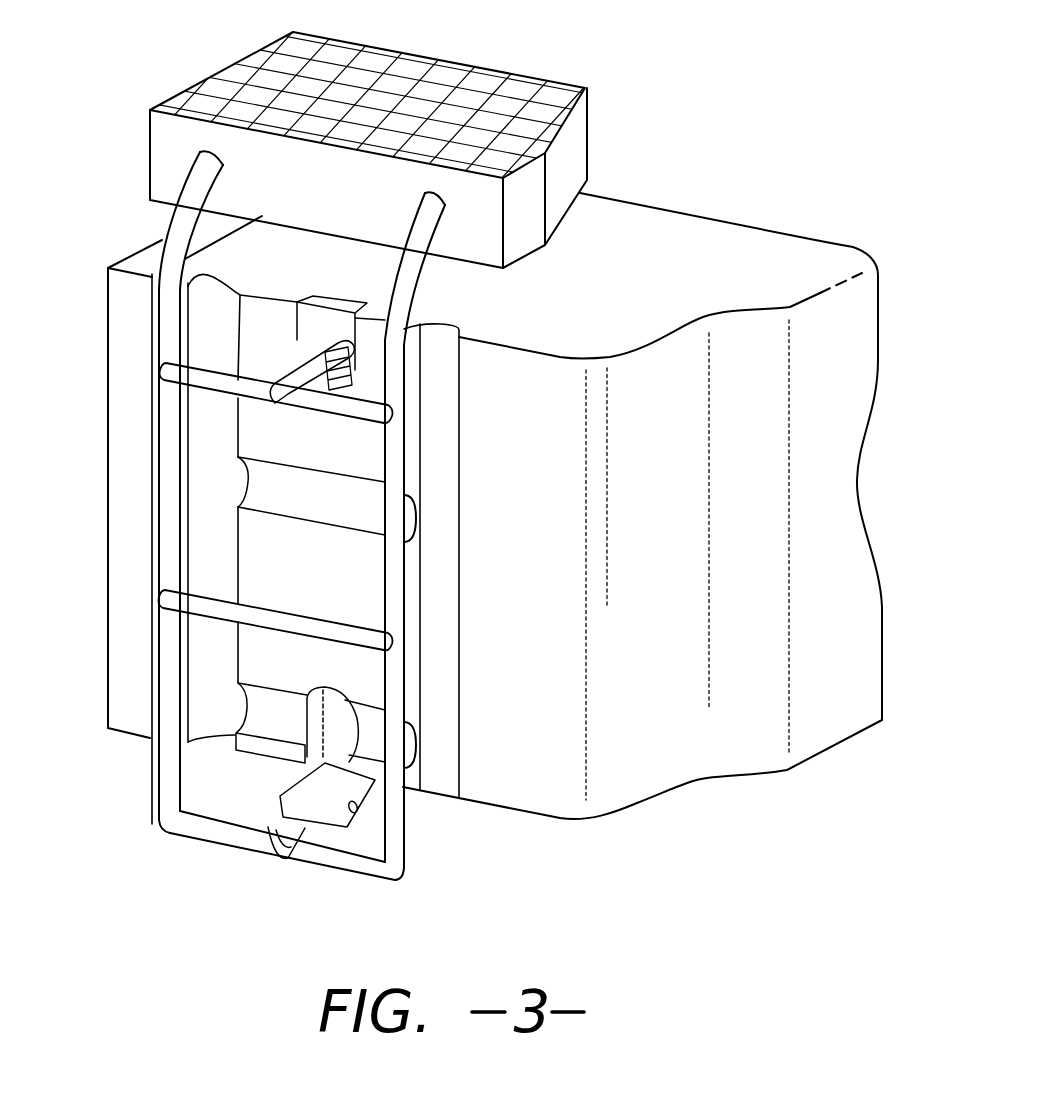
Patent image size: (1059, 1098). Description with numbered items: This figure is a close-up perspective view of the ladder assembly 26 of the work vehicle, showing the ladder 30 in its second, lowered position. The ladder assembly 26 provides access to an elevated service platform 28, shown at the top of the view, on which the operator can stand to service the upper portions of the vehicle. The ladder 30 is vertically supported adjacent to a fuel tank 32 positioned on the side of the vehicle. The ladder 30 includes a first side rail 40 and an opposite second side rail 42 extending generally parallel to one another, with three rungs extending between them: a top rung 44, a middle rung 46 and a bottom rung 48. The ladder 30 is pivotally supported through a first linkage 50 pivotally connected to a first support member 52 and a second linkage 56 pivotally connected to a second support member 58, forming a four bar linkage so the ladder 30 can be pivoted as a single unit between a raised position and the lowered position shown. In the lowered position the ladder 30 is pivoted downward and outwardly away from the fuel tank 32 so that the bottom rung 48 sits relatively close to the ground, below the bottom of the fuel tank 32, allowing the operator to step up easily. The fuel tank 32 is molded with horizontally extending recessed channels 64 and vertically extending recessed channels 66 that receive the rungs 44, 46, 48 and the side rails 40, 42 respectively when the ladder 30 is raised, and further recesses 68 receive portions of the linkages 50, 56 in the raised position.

The ladder assembly 26 is at (652, 74).
The service platform 28 is at (290, 70).
The ladder 30 is at (163, 482).
The fuel tank 32 is at (667, 235).
The first side rail 40 is at (172, 538).
The second side rail 42 is at (392, 588).
The top rung 44 is at (210, 373).
The middle rung 46 is at (210, 603).
The bottom rung 48 is at (222, 832).
The first linkage 50 is at (292, 355).
The first support member 52 is at (370, 377).
The second linkage 56 is at (303, 825).
The second support member 58 is at (367, 800).
The horizontally extending recessed channels 64 is at (247, 485).
The vertically extending recessed channels 66 is at (443, 465).
The retainer block 68 is at (333, 317).